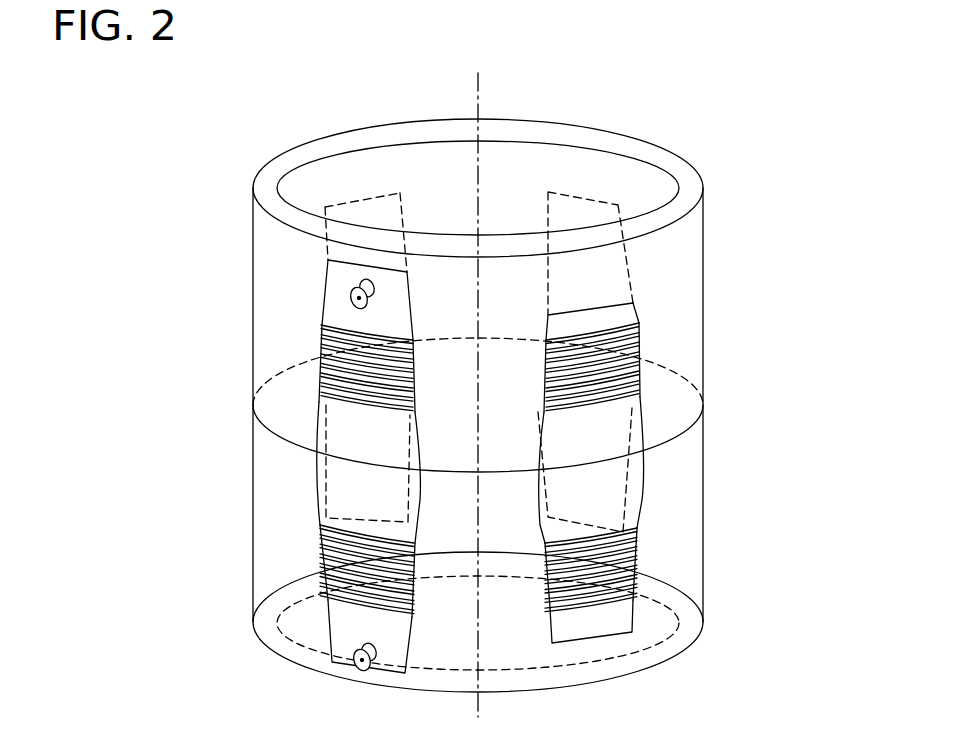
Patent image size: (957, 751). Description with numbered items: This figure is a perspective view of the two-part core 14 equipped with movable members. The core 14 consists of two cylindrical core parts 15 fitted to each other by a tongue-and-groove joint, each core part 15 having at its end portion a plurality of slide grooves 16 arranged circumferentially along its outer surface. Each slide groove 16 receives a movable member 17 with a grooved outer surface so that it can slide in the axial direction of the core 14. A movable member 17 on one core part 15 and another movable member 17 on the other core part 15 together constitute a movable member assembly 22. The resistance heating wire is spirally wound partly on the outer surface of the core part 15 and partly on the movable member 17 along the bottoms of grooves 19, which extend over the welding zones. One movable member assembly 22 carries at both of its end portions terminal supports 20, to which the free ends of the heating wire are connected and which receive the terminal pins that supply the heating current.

The core 14 is at (735, 205).
The core part 15 is at (253, 383).
The slide groove 16 is at (327, 285).
The movable member 17 is at (327, 313).
The groove 19 is at (320, 370).
The terminal support 20 is at (352, 292).
The movable member assembly 22 is at (781, 436).